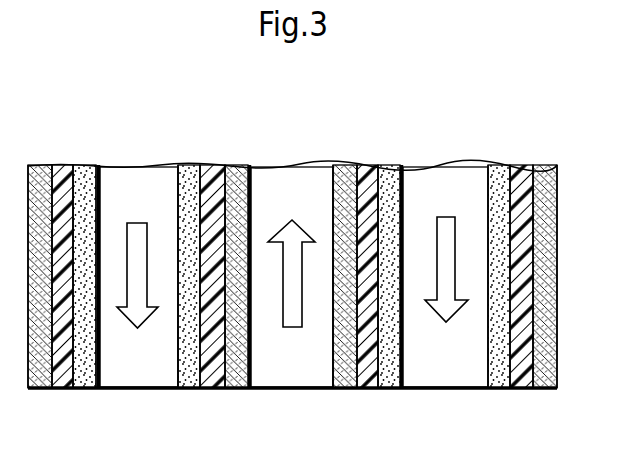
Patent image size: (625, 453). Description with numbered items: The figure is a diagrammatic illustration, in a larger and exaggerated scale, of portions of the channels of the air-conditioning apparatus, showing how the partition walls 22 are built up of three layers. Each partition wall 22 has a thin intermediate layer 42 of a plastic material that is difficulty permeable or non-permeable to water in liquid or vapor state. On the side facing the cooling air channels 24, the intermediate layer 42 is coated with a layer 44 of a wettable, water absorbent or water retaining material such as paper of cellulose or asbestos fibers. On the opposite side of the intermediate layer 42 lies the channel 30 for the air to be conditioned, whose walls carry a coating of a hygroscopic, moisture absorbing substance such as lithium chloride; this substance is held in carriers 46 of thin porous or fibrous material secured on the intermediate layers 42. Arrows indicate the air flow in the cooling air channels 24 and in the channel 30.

The partition wall 22 is at (216, 160).
The cooling air channel 24 is at (138, 378).
The channel for the air to be conditioned 30 is at (315, 375).
The intermediate layer 42 is at (215, 388).
The layer of wettable material 44 is at (100, 172).
The carrier 46 is at (250, 177).